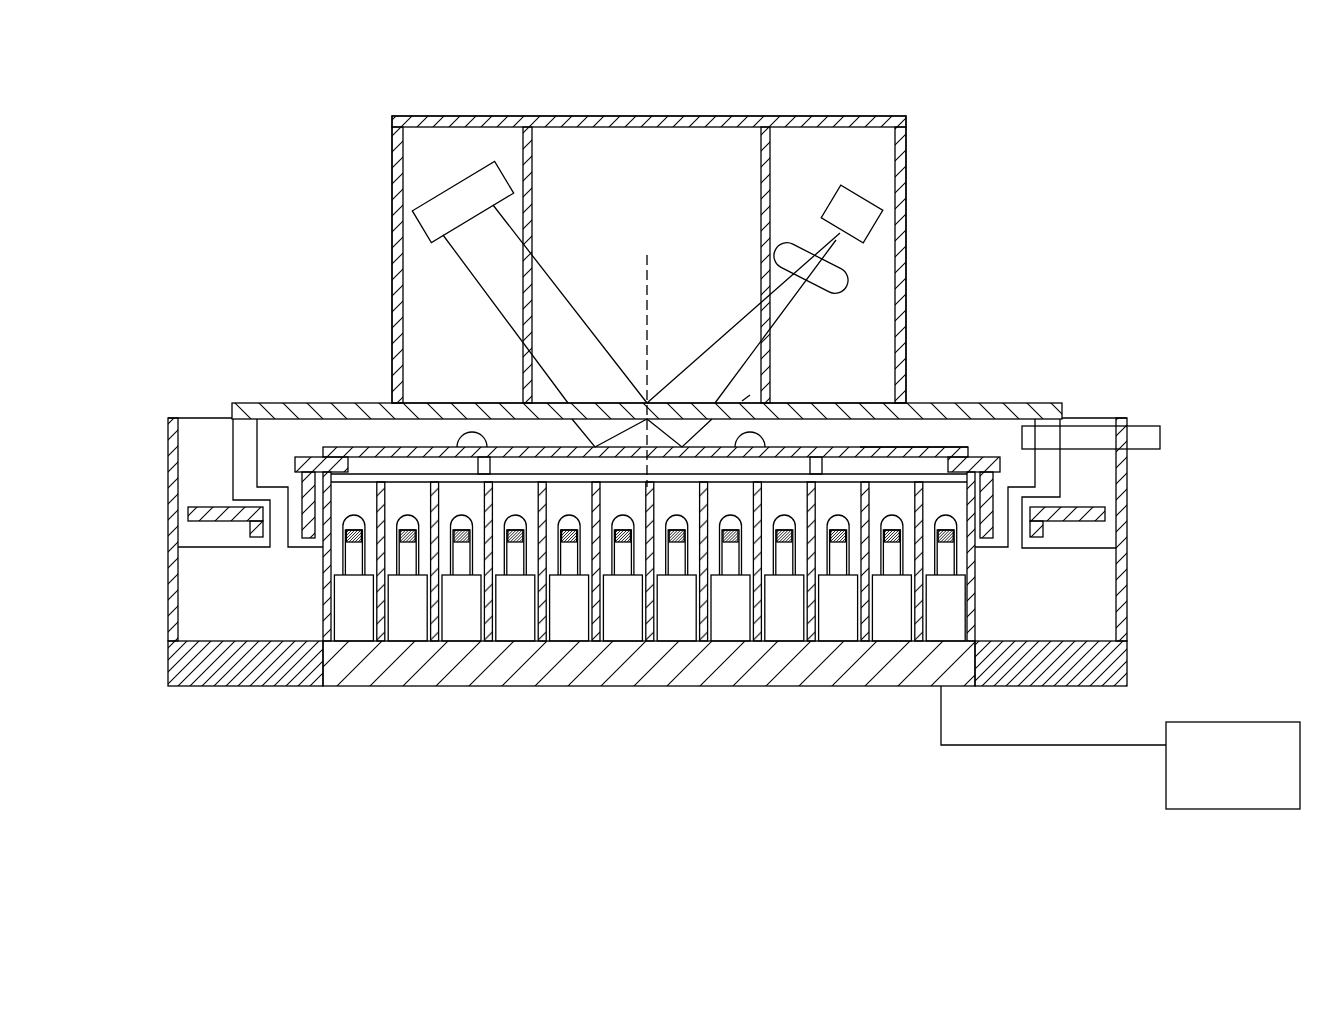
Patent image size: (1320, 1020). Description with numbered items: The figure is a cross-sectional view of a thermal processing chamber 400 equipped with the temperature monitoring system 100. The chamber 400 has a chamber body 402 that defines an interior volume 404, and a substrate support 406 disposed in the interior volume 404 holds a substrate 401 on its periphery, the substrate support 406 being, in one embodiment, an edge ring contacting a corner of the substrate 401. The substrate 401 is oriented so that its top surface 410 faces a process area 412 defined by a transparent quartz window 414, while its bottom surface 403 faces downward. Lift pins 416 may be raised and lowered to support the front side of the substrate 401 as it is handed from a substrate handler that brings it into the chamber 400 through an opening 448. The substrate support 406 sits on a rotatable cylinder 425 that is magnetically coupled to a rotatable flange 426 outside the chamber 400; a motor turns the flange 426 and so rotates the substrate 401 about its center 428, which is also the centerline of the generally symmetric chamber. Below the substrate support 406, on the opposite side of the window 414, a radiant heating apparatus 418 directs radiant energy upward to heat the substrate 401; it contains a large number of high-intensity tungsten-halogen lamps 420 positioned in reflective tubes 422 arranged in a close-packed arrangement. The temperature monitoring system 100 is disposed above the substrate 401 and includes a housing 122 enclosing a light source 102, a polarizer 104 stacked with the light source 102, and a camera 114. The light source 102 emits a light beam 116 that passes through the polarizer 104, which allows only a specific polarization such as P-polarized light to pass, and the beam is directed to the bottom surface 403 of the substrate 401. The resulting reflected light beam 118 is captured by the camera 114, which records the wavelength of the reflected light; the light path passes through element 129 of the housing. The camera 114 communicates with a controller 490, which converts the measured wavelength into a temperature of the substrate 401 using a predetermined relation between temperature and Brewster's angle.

The temperature monitoring system 100 is at (882, 86).
The light source 102 is at (840, 195).
The polarizer 104 is at (840, 285).
The camera 114 is at (455, 184).
The light beam 116 is at (793, 300).
The reflected light beam 118 is at (548, 268).
The housing 122 is at (581, 116).
The window 129 is at (745, 400).
The thermal processing chamber 400 is at (212, 236).
The substrate 401 is at (735, 447).
The chamber body 402 is at (1127, 572).
The bottom surface 403 is at (862, 447).
The interior volume 404 is at (545, 443).
The substrate support 406 is at (300, 464).
The top surface 410 is at (830, 468).
The process area 412 is at (632, 468).
The transparent quartz window 414 is at (738, 468).
The lift pins 416 is at (480, 468).
The radiant heating apparatus 418 is at (993, 600).
The lamp 420 is at (1013, 498).
The reflective tube 422 is at (985, 498).
The rotatable cylinder 425 is at (305, 527).
The rotatable flange 426 is at (200, 514).
The center 428 is at (647, 268).
The opening 448 is at (1145, 426).
The controller 490 is at (1250, 776).